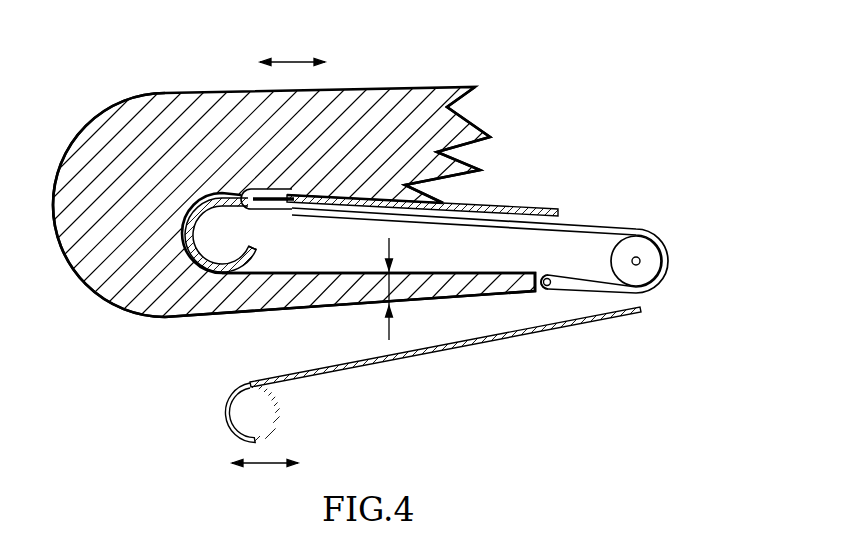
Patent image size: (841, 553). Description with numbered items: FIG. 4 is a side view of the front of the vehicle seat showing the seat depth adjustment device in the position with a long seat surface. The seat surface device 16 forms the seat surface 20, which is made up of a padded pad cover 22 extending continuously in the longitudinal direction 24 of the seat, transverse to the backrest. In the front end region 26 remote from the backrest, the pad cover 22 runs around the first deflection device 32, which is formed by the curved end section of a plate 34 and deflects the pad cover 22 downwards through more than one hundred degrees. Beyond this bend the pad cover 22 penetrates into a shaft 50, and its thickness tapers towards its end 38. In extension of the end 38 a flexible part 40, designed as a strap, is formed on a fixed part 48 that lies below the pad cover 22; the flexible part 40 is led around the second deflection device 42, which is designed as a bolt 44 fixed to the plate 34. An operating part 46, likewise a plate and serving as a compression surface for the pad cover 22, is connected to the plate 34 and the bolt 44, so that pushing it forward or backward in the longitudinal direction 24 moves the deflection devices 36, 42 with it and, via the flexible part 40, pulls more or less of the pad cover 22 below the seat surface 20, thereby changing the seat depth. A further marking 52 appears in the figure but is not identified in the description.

The seat surface device 16 is at (606, 188).
The seat surface 20 is at (393, 87).
The pad cover 22 is at (432, 100).
The longitudinal direction 24 is at (295, 61).
The front end region 26 is at (207, 330).
The first deflection device 32 is at (190, 274).
The plate 34 is at (238, 212).
The deflection device 36 is at (205, 258).
The end of the pad cover 38 is at (549, 305).
The flexible part 40 is at (620, 227).
The second deflection device 42 is at (673, 232).
The bolt 44 is at (653, 262).
The operating part 46 is at (420, 356).
The fixed part 48 is at (554, 207).
The shaft 50 is at (127, 327).
The wall thickness 52 is at (394, 282).